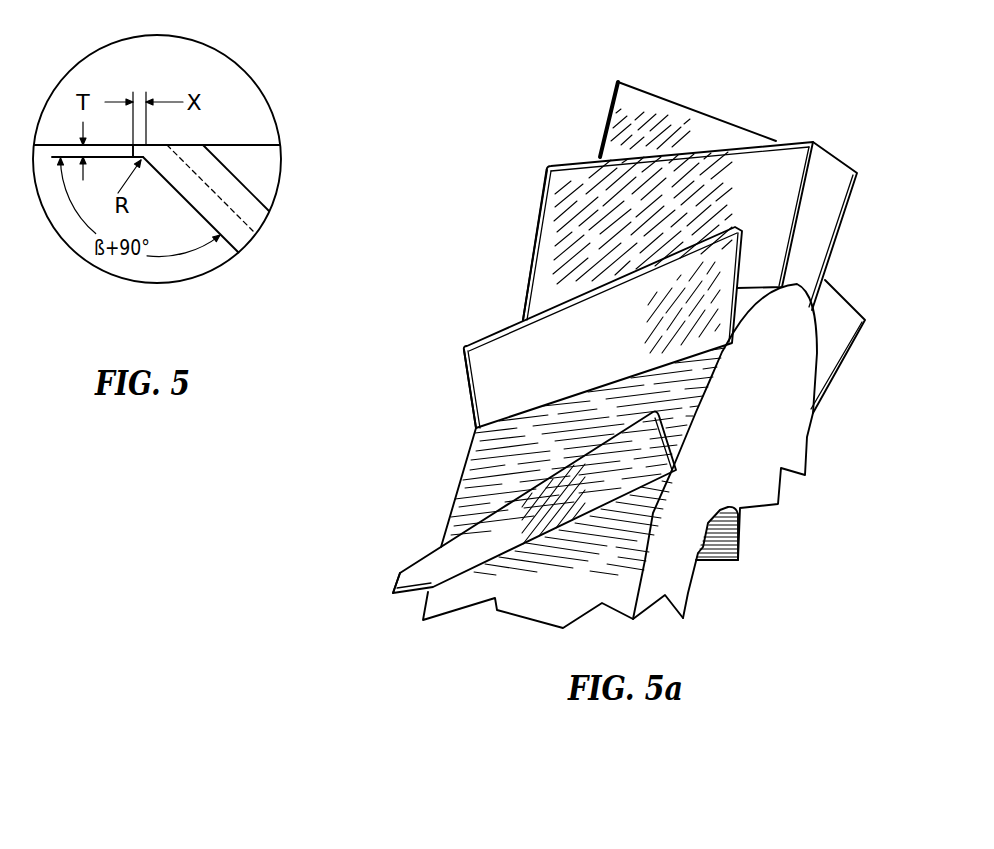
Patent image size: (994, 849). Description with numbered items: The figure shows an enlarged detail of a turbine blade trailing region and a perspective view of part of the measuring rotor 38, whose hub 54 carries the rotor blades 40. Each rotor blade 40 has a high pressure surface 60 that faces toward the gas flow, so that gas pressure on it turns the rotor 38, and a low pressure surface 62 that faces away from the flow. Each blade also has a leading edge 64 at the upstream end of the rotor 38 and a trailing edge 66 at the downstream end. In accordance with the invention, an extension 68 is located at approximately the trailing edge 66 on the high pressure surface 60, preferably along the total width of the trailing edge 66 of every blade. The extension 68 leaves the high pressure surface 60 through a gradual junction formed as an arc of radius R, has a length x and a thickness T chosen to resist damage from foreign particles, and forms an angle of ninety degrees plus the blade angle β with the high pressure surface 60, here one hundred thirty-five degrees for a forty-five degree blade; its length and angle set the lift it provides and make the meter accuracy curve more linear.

In FIG. 5a, the rotor 38 is at (405, 540).
In FIG. 5, the rotor blade 40 is at (241, 176).
In FIG. 5a, the rotor blade 40 is at (695, 112).
In FIG. 5a, the hub 54 is at (782, 430).
In FIG. 5, the high pressure surface 60 is at (195, 208).
In FIG. 5a, the high pressure surface 60 is at (665, 135).
In FIG. 5a, the low pressure surface 62 is at (733, 143).
In FIG. 5a, the leading edge 64 is at (738, 228).
In FIG. 5, the trailing edge 66 is at (160, 144).
In FIG. 5a, the trailing edge 66 is at (618, 82).
In FIG. 5, the extension 68 is at (131, 150).
In FIG. 5a, the extension 68 is at (605, 115).